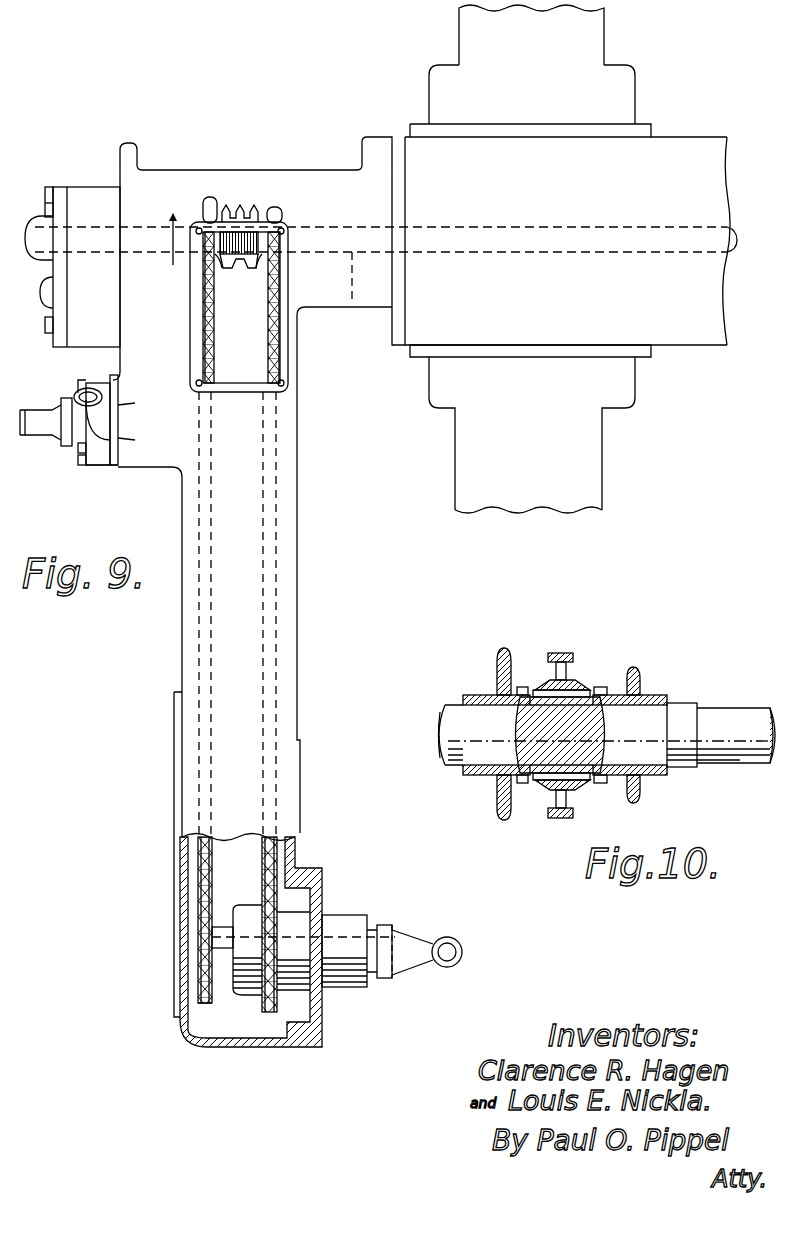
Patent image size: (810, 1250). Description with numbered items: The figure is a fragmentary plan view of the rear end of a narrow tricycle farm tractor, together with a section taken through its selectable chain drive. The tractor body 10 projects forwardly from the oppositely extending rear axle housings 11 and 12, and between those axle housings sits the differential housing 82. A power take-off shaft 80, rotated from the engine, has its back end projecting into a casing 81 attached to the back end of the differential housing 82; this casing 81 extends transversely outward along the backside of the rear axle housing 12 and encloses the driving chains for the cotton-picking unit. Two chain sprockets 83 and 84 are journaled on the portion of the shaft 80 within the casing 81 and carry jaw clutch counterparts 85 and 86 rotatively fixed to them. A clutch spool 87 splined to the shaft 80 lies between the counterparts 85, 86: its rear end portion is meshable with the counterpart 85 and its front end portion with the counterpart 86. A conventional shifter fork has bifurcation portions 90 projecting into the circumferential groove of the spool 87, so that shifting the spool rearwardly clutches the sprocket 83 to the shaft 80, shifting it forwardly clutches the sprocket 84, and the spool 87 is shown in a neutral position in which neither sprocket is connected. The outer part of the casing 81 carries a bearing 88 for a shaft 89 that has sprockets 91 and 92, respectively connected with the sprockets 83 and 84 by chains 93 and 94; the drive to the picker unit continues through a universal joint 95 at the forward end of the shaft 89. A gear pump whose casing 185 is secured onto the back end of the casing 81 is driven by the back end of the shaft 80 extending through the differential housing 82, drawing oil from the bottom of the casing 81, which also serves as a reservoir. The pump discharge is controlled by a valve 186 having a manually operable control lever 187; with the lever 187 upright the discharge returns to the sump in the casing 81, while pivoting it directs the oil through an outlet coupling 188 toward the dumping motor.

In FIG. 9, the body 10 is at (702, 152).
In FIG. 9, the rear axle housing 11 is at (604, 32).
In FIG. 9, the rear axle housing 12 is at (598, 480).
In FIG. 9, the power take-off shaft 80 is at (347, 300).
In FIG. 10, the power take-off shaft 80 is at (738, 705).
In FIG. 9, the casing 81 is at (310, 172).
In FIG. 9, the differential housing 82 is at (470, 186).
In FIG. 9, the chain sprocket 83 is at (206, 220).
In FIG. 10, the chain sprocket 83 is at (503, 648).
In FIG. 9, the chain sprocket 84 is at (272, 220).
In FIG. 10, the chain sprocket 84 is at (640, 672).
In FIG. 9, the jaw clutch counterpart 85 is at (220, 270).
In FIG. 10, the jaw clutch counterpart 85 is at (524, 687).
In FIG. 9, the jaw clutch counterpart 86 is at (258, 268).
In FIG. 10, the jaw clutch counterpart 86 is at (604, 687).
In FIG. 9, the clutch spool 87 is at (243, 270).
In FIG. 10, the clutch spool 87 is at (578, 680).
In FIG. 9, the bearing 88 is at (345, 990).
In FIG. 9, the shaft 89 is at (340, 937).
In FIG. 10, the bifurcation portions 90 is at (560, 653).
In FIG. 9, the sprocket 91 is at (203, 1005).
In FIG. 9, the sprocket 92 is at (268, 1014).
In FIG. 9, the chain 93 is at (200, 889).
In FIG. 9, the chain 94 is at (278, 867).
In FIG. 9, the universal joint 95 is at (422, 942).
In FIG. 9, the gear pump casing 185 is at (86, 186).
In FIG. 9, the valve 186 is at (93, 470).
In FIG. 9, the control lever 187 is at (33, 430).
In FIG. 9, the outlet coupling 188 is at (105, 410).